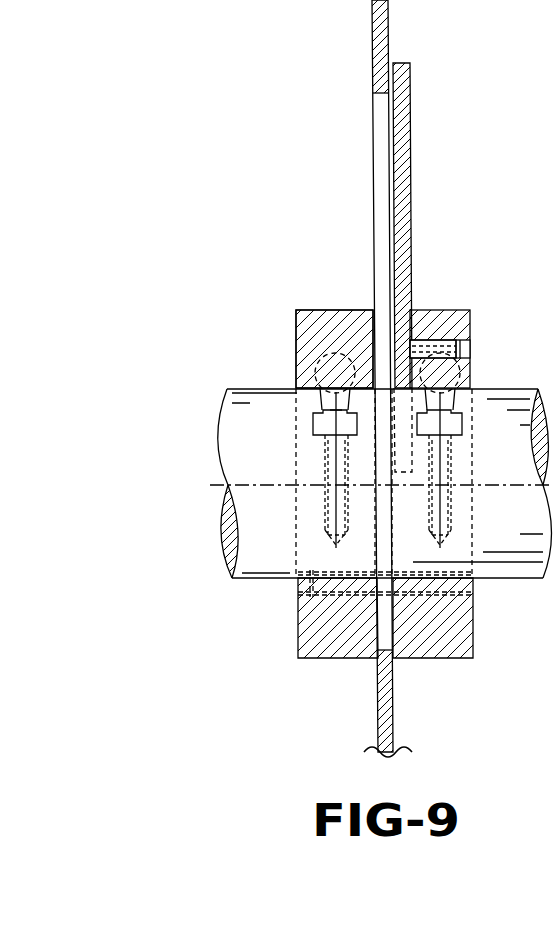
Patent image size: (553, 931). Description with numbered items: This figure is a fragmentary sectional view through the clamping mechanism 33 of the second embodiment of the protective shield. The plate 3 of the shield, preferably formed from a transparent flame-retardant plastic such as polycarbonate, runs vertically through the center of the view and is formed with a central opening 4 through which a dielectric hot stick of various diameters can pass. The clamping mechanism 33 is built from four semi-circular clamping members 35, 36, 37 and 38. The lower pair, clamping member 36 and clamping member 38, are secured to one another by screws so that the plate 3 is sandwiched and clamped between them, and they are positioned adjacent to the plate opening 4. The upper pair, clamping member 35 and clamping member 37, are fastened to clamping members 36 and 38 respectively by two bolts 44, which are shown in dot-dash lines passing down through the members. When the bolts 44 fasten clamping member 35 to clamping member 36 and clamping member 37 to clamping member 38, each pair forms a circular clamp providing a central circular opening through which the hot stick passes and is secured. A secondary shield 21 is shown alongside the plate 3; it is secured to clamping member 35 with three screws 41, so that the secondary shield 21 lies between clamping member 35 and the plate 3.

The plate 3 is at (368, 33).
The secondary shield 21 is at (404, 104).
The clamping mechanism 33 is at (346, 306).
The clamping member 37 is at (312, 310).
The clamping member 35 is at (466, 310).
The screw 41 is at (406, 334).
The central opening 4 is at (474, 593).
The clamping member 38 is at (326, 658).
The clamping member 36 is at (450, 658).
The bolt 44 is at (308, 368).